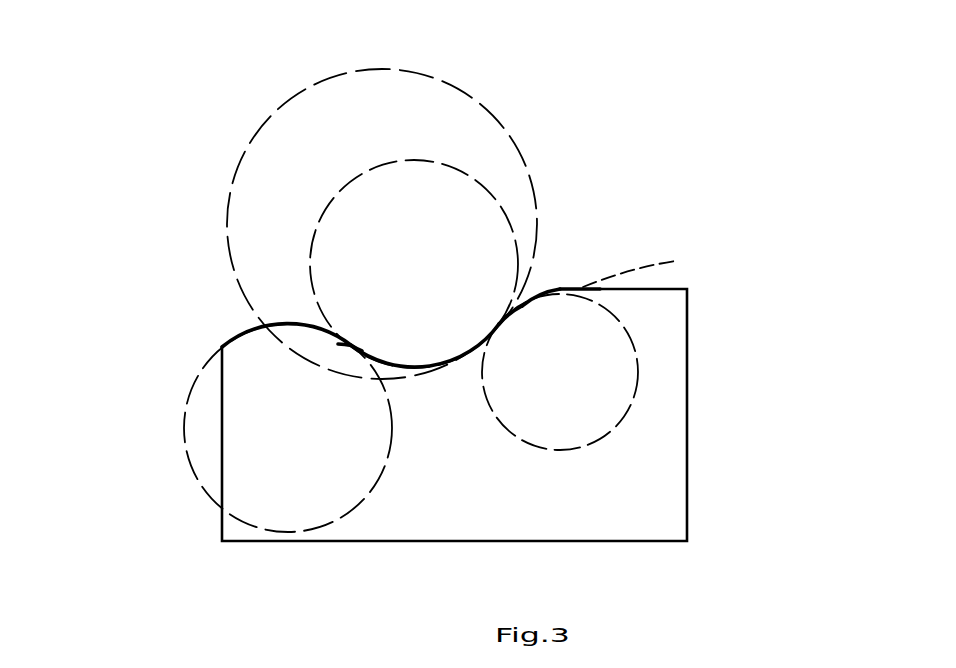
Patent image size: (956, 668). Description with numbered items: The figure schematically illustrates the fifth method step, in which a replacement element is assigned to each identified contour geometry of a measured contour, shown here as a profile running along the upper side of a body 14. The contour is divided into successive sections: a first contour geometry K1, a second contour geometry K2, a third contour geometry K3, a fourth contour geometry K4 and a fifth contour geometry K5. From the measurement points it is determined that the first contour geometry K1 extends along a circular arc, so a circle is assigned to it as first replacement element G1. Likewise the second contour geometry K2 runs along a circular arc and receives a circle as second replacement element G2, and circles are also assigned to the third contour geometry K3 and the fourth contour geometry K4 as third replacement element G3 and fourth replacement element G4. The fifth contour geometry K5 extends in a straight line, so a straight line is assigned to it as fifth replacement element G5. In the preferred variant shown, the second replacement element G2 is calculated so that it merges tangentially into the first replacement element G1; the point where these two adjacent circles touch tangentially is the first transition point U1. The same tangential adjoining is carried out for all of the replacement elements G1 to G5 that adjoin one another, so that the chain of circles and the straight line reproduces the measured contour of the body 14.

The body (workpiece block) 14 is at (670, 432).
The first replacement element G1 is at (192, 472).
The second replacement element G2 is at (343, 190).
The third replacement element G3 is at (465, 90).
The fourth replacement element G4 is at (507, 427).
The fifth replacement element G5 is at (638, 273).
The first contour geometry K1 is at (243, 330).
The second contour geometry K2 is at (380, 358).
The third contour geometry K3 is at (487, 338).
The fourth contour geometry K4 is at (510, 312).
The fifth contour geometry K5 is at (570, 289).
The first transition point U1 is at (347, 347).